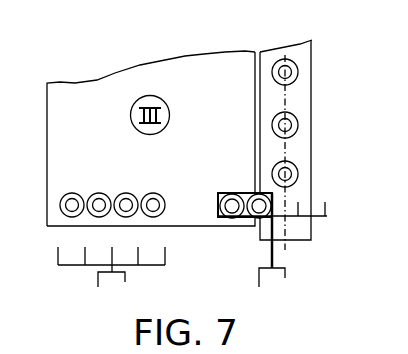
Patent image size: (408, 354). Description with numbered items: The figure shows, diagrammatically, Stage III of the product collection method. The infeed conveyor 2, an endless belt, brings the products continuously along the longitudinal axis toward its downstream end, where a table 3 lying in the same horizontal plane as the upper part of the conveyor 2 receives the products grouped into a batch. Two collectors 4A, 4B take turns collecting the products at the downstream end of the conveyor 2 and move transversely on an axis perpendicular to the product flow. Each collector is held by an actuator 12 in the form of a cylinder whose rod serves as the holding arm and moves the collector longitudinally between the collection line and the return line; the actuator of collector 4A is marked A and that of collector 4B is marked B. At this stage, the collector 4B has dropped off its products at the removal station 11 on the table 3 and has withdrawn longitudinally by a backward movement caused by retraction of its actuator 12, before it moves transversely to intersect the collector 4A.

The infeed conveyor 2 is at (302, 57).
The table 3 is at (83, 82).
The removal station 11 is at (167, 192).
The actuator 12 is at (285, 278).
The collector 4A is at (332, 222).
The collector 4B is at (54, 271).